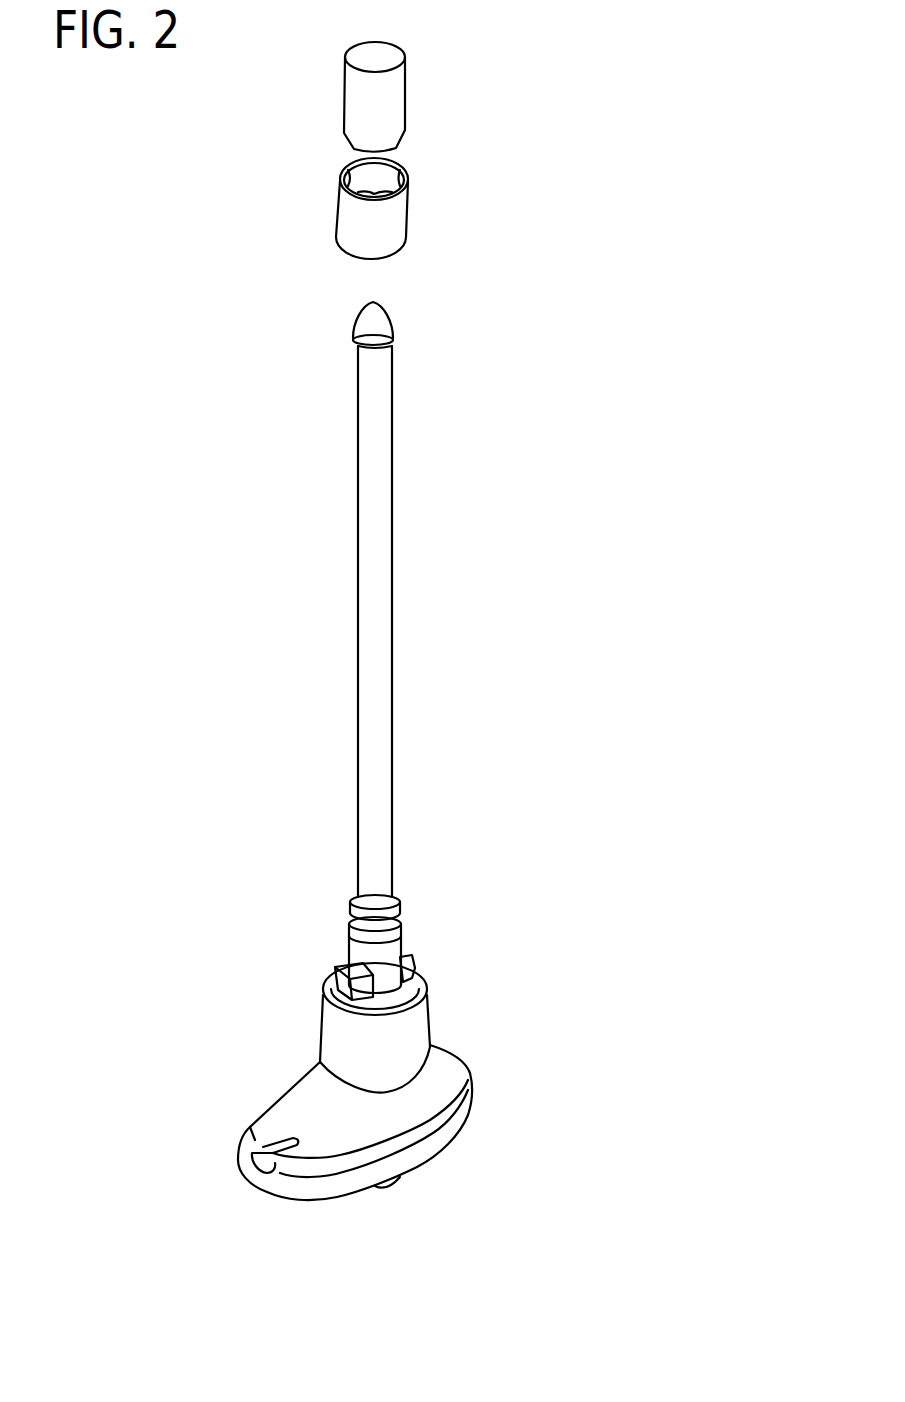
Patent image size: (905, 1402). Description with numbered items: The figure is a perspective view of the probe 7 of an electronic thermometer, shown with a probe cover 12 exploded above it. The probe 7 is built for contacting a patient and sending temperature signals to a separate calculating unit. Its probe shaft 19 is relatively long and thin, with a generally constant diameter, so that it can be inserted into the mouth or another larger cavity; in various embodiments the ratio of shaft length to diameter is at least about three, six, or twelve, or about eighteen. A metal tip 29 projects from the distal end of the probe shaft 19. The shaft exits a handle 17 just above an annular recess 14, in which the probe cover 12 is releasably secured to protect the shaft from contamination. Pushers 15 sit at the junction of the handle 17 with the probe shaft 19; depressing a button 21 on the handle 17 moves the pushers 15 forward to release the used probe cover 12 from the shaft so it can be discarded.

The probe cover 12 is at (418, 100).
The probe 7 is at (513, 450).
The metal tip 29 is at (392, 320).
The probe shaft 19 is at (362, 502).
The annular recess 14 is at (357, 927).
The pushers 15 is at (405, 962).
The handle 17 is at (436, 1122).
The button 21 is at (387, 1183).